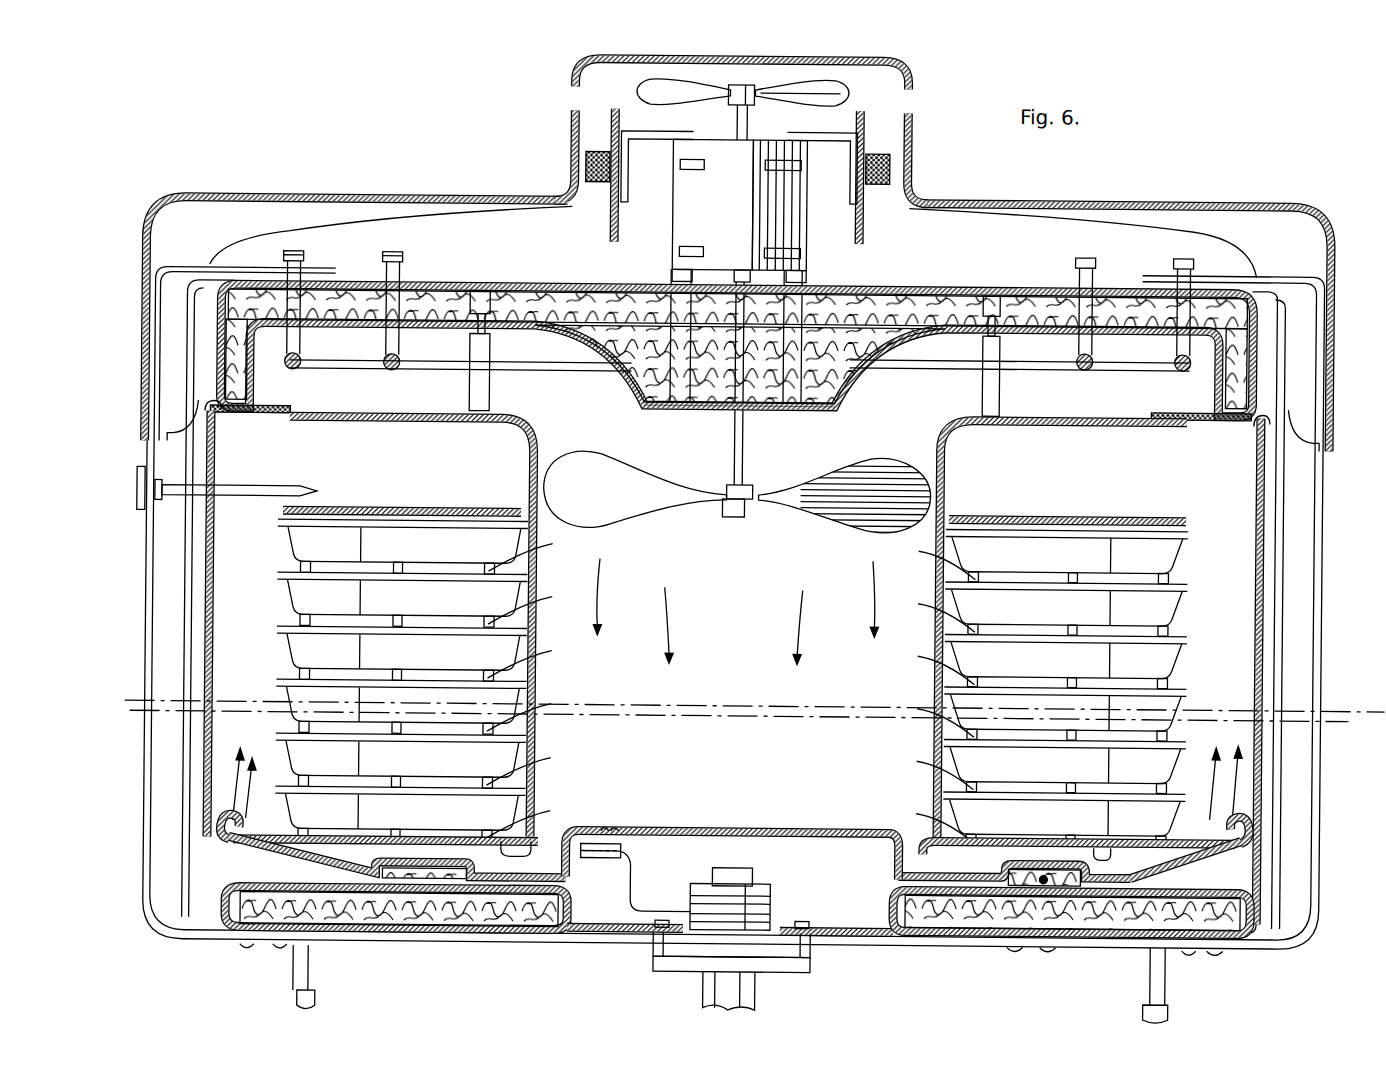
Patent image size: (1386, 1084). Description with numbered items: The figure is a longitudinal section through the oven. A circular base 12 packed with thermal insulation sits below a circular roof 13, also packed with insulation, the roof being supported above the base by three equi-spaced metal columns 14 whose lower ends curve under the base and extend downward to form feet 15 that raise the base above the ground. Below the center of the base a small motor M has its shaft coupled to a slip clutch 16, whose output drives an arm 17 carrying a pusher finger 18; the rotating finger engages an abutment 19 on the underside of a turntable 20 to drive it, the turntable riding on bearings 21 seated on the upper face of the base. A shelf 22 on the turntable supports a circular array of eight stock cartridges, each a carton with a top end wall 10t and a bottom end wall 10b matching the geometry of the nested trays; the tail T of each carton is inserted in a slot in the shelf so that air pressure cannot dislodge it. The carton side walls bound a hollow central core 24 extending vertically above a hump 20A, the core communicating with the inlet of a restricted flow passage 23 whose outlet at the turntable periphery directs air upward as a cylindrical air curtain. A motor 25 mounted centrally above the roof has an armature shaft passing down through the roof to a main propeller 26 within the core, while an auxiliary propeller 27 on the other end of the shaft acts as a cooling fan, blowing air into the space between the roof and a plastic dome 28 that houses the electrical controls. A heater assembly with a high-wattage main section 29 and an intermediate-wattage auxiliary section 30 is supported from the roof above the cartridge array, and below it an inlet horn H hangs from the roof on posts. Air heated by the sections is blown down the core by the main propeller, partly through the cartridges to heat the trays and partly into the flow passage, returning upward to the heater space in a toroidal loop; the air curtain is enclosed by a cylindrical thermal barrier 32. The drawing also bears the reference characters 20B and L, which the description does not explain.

The top end wall 10t is at (408, 509).
The bottom end wall 10b is at (985, 843).
The circular base 12 is at (933, 938).
The circular roof 13 is at (945, 300).
The metal columns 14 is at (1322, 591).
The feet 15 is at (1166, 985).
The slip clutch 16 is at (762, 905).
The arm 17 is at (634, 885).
The pusher finger 18 is at (622, 855).
The abutment 19 is at (618, 832).
The turntable 20 is at (895, 880).
The hump 20A is at (748, 831).
The inclined drip plate 20B is at (1192, 869).
The bearings 21 is at (1043, 896).
The shelf 22 is at (1093, 848).
The restricted flow passage 23 is at (1225, 837).
The hollow central core 24 is at (748, 614).
The motor 25 is at (790, 232).
The main propeller 26 is at (843, 515).
The auxiliary propeller 27 is at (780, 98).
The plastic dome 28 is at (982, 194).
The main section 29 is at (345, 368).
The auxiliary section 30 is at (418, 370).
The thermal barrier 32 is at (210, 622).
The inlet horn H is at (646, 408).
The inner wall L is at (1180, 533).
The tail T is at (295, 592).
The motor M is at (722, 1010).